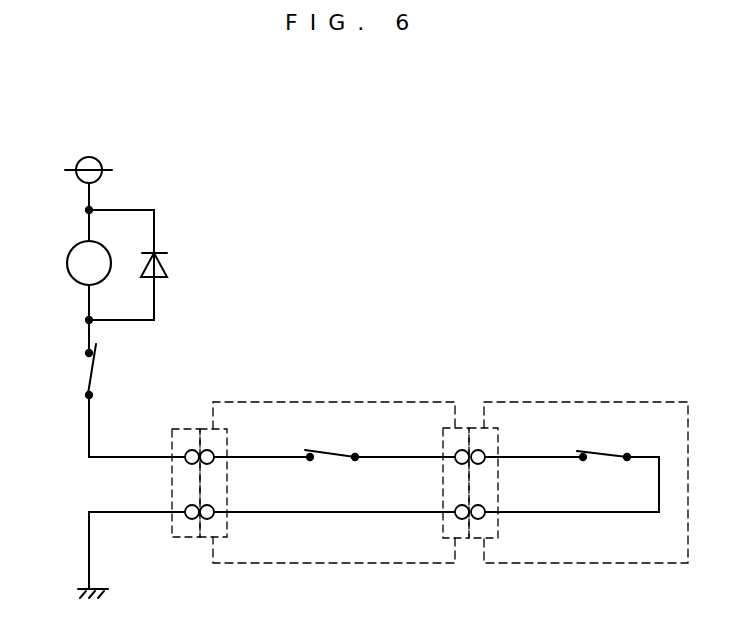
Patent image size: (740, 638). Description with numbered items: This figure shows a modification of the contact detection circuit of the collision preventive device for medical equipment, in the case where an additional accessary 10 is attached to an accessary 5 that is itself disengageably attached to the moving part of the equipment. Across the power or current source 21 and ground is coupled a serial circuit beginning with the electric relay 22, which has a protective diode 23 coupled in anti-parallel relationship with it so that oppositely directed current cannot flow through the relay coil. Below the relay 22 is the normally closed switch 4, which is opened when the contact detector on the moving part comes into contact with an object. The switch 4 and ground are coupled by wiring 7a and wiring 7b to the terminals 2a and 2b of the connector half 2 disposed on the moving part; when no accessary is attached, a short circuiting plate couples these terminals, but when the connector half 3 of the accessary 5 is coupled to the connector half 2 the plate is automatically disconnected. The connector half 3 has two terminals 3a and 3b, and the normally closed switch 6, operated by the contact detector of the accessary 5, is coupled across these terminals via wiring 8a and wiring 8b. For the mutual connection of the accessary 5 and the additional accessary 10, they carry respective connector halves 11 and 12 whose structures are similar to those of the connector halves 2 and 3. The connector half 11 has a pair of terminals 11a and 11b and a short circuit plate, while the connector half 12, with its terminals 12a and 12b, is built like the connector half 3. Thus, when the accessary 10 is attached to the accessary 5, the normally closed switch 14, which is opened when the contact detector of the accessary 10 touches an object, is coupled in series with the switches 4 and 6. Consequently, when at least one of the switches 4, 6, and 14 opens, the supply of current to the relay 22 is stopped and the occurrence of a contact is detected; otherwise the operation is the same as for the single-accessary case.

The power or current source 21 is at (102, 163).
The electric relay 22 is at (68, 255).
The protective diode 23 is at (167, 267).
The normally closed switch 4 is at (85, 370).
The wiring 7a is at (102, 459).
The wiring 7b is at (124, 508).
The connector half 2 is at (178, 540).
The connector half 3 is at (210, 542).
The terminal 2a is at (185, 452).
The terminal 2b is at (187, 518).
The terminal 3a is at (210, 450).
The terminal 3b is at (213, 518).
The accessary 5 is at (360, 402).
The normally closed switch 6 is at (335, 452).
The wiring 8a is at (257, 455).
The wiring 8b is at (297, 513).
The additional accessary 10 is at (597, 402).
The connector half 11 is at (445, 542).
The connector half 12 is at (478, 542).
The terminal 11a is at (457, 452).
The terminal 11b is at (457, 520).
The terminal 12a is at (487, 450).
The terminal 12b is at (487, 518).
The normally closed switch 14 is at (612, 450).